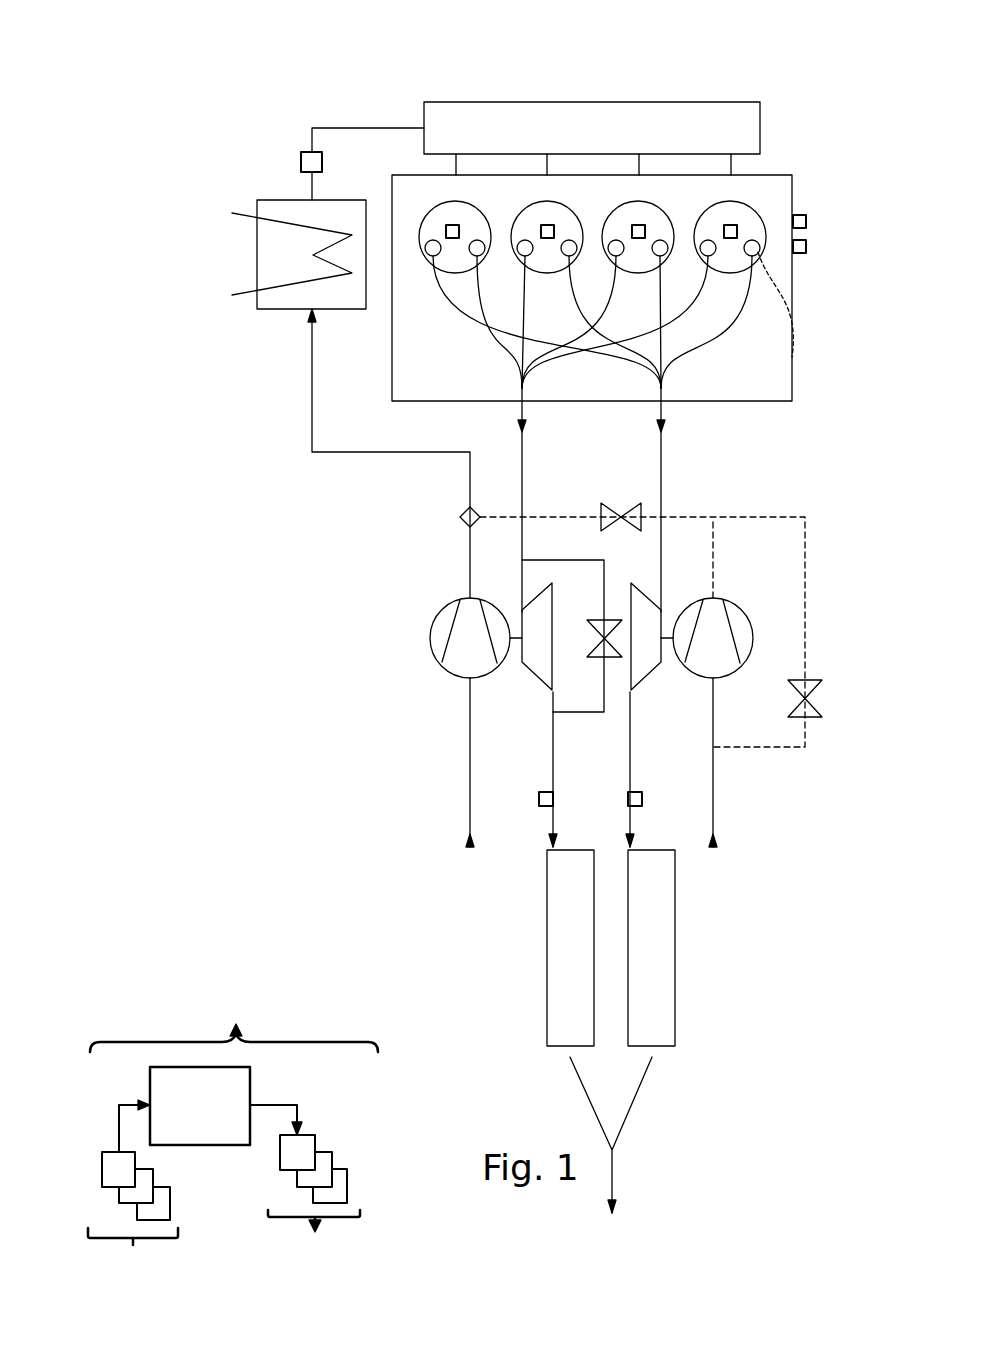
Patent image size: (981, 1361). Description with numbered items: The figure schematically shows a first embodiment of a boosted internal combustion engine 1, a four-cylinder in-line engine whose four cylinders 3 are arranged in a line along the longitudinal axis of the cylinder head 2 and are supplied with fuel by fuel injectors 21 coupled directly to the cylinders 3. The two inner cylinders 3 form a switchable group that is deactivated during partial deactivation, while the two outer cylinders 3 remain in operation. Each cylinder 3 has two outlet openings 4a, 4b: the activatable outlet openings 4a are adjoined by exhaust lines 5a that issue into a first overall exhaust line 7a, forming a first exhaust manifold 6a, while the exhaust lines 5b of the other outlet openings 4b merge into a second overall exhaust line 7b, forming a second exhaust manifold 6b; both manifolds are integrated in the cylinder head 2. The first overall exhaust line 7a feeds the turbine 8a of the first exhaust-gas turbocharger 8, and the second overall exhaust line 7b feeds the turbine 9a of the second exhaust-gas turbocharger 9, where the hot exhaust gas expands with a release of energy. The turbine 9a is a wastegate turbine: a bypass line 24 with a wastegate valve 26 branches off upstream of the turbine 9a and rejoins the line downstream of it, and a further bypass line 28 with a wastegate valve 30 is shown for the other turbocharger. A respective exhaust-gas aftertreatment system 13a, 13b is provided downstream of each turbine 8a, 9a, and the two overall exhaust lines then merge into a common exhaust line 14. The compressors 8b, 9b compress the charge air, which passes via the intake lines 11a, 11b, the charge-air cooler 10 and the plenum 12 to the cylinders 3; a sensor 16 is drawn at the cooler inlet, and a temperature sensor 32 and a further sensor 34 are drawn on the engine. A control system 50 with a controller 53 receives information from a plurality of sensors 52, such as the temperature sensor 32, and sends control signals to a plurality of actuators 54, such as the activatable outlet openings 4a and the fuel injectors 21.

The internal combustion engine 1 is at (457, 76).
The cylinder head 2 is at (779, 183).
The cylinders 3 is at (457, 200).
The activatable outlet openings 4a is at (428, 213).
The outlet openings 4b is at (420, 270).
The exhaust lines 5a is at (730, 358).
The exhaust lines 5b is at (528, 335).
The first exhaust manifold 6a is at (705, 340).
The second exhaust manifold 6b is at (522, 340).
The first overall exhaust line 7a is at (663, 443).
The second overall exhaust line 7b is at (523, 443).
The first exhaust-gas turbocharger 8 is at (652, 651).
The turbine of the first exhaust-gas turbocharger 8a is at (641, 610).
The compressor of the first exhaust-gas turbocharger 8b is at (713, 600).
The second exhaust-gas turbocharger 9 is at (531, 651).
The turbine of the second exhaust-gas turbocharger 9a is at (541, 605).
The compressor of the second exhaust-gas turbocharger 9b is at (470, 638).
The charge-air cooler 10 is at (270, 252).
The intake line 11a is at (713, 784).
The intake line 11b is at (470, 784).
The plenum 12 is at (437, 122).
The exhaust-gas aftertreatment system 13a is at (674, 951).
The exhaust-gas aftertreatment system 13b is at (551, 951).
The common exhaust line 14 is at (613, 1186).
The sensor 16 is at (300, 163).
The fuel injectors 21 is at (452, 225).
The bypass line 24 is at (604, 714).
The wastegate valve 26 is at (601, 658).
The bypass line 28 is at (770, 750).
The wastegate valve 30 is at (790, 712).
The temperature sensor 32 is at (807, 221).
The sensor 34 is at (807, 246).
The control system 50 is at (234, 1017).
The sensors 52 is at (133, 1221).
The controller 53 is at (210, 1109).
The actuators 54 is at (314, 1203).